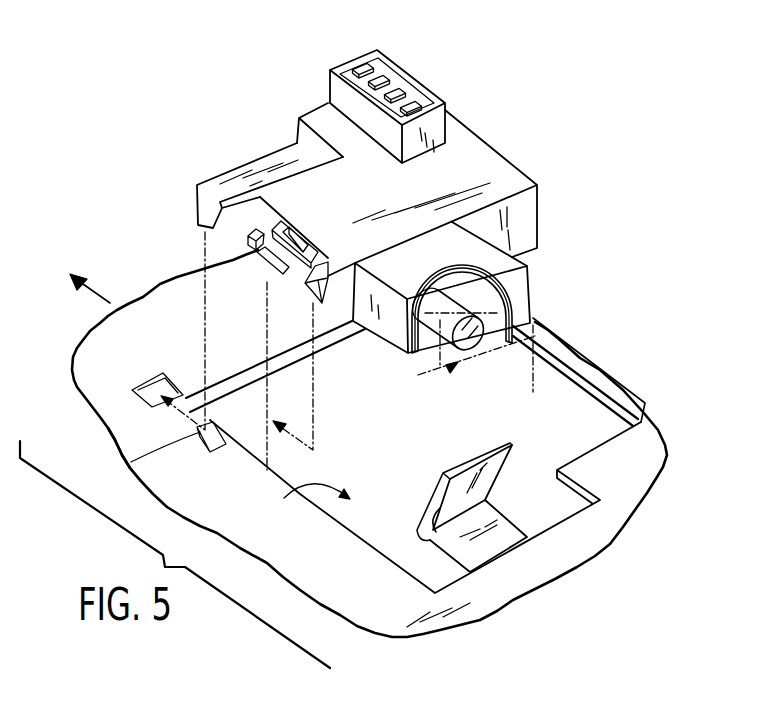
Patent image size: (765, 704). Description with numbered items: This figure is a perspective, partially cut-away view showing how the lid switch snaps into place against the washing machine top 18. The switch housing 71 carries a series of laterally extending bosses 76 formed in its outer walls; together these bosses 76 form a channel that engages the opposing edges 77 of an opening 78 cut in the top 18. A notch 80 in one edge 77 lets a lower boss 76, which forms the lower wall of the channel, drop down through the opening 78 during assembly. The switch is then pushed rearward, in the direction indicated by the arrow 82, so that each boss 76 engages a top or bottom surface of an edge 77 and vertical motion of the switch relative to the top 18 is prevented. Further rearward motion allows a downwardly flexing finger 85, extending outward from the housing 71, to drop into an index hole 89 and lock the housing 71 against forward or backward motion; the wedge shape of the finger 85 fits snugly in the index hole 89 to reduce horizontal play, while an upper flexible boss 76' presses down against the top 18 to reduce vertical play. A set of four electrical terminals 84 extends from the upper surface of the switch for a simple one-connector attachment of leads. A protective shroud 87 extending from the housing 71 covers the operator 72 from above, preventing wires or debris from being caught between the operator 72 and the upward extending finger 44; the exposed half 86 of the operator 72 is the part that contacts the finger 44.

The top 18 is at (617, 473).
The upward extending finger 44 is at (405, 563).
The switch housing 71 is at (462, 153).
The operator 72 is at (500, 322).
The laterally extending bosses 76 is at (416, 239).
The upper flexible boss 76' is at (305, 229).
The opposing edges 77 is at (597, 393).
The opening 78 is at (295, 493).
The notch 80 is at (147, 455).
The arrow 82 is at (100, 287).
The electrical terminals 84 is at (327, 42).
The downwardly flexing finger 85 is at (198, 210).
The one half of the operator 86 is at (440, 374).
The protective shroud 87 is at (510, 268).
The index hole 89 is at (163, 381).